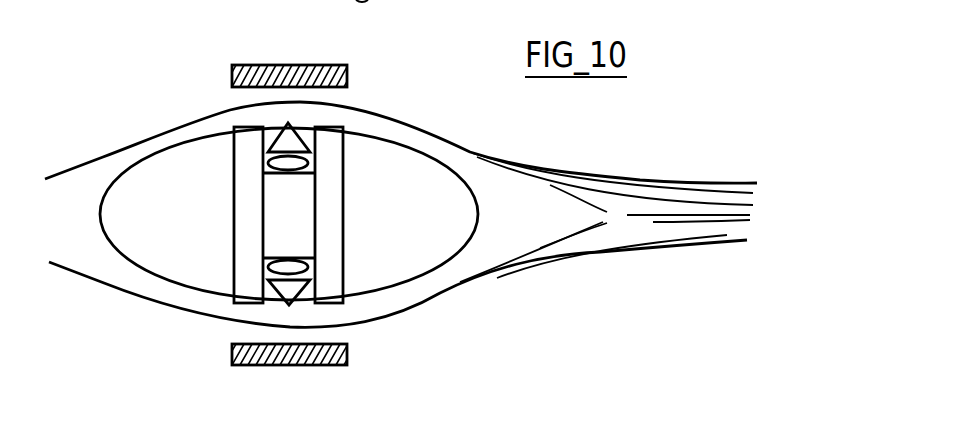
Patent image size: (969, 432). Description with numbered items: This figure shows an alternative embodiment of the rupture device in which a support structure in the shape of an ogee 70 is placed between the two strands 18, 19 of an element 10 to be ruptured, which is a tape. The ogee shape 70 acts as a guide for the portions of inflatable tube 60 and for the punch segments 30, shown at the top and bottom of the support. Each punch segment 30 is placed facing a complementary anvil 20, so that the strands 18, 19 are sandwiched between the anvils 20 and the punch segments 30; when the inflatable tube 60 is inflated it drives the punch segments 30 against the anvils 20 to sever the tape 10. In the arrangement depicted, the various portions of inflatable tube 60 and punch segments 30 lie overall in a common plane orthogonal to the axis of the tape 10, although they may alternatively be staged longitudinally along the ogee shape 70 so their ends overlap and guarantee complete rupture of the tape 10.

The element to be ruptured 10 is at (697, 168).
The strand 18 is at (104, 155).
The strand 19 is at (112, 283).
The anvil 20 is at (287, 72).
The punch segment 30 is at (295, 143).
The inflatable tube 60 is at (268, 166).
The support structure in the shape of an ogee 70 is at (407, 233).